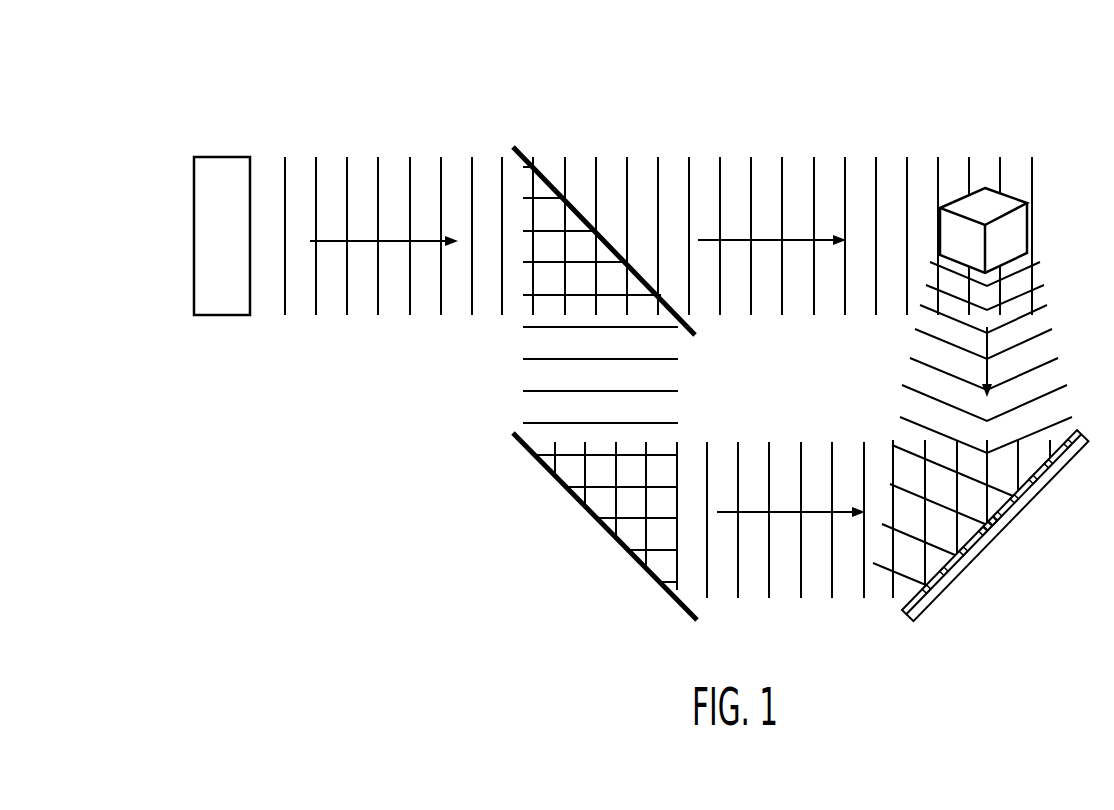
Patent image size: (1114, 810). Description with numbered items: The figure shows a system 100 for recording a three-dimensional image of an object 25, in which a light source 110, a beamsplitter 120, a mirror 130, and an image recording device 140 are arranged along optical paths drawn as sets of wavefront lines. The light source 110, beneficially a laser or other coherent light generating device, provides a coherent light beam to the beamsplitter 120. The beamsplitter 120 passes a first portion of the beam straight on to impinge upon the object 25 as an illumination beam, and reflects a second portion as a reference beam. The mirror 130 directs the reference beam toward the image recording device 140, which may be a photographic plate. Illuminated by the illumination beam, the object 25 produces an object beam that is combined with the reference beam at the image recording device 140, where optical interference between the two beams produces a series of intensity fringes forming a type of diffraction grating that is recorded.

The system 100 is at (455, 40).
The light source 110 is at (226, 148).
The beamsplitter 120 is at (640, 264).
The object 25 is at (986, 178).
The mirror 130 is at (622, 566).
The image recording device 140 is at (1013, 537).